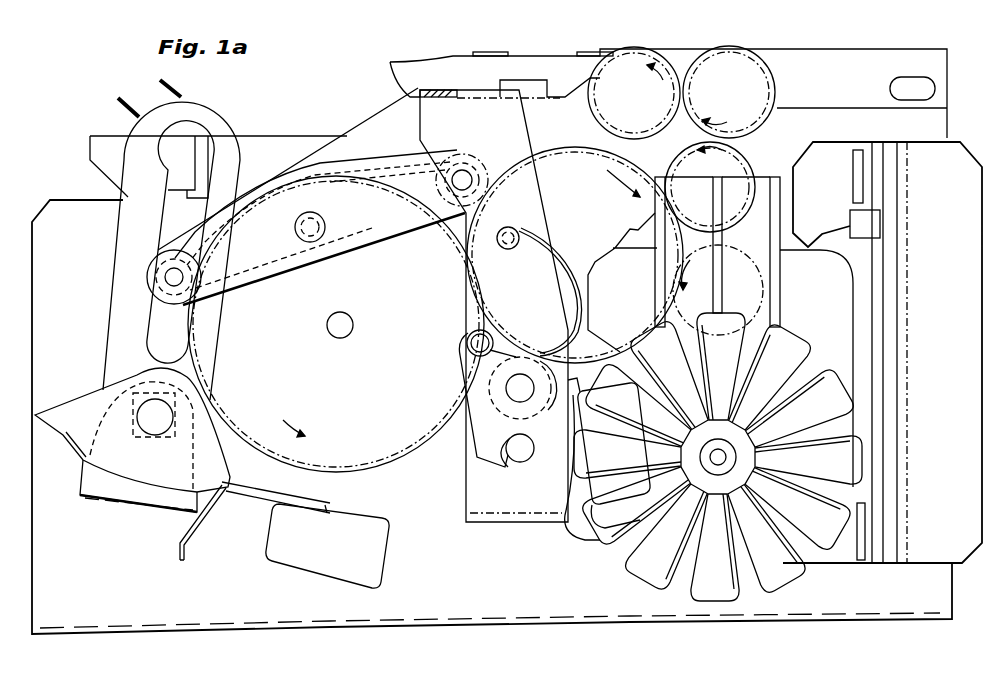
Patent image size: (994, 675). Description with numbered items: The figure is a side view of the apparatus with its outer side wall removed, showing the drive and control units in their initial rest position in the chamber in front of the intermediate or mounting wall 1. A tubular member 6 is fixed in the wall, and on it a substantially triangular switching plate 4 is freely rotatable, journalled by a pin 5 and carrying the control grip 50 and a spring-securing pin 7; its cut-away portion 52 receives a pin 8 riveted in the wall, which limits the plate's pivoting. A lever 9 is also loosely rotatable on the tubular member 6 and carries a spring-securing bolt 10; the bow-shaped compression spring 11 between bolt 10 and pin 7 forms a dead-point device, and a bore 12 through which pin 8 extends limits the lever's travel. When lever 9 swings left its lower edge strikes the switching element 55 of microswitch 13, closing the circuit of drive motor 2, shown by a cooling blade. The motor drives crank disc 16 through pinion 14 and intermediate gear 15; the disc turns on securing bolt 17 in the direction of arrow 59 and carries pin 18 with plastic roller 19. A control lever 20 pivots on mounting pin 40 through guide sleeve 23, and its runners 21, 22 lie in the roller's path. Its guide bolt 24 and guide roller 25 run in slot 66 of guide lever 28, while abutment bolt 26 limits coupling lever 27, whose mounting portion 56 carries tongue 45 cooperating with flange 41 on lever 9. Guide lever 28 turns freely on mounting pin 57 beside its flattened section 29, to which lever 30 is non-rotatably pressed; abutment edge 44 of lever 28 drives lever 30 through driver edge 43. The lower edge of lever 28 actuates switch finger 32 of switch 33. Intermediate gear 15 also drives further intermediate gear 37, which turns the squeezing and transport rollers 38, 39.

The mounting wall 1 is at (35, 227).
The drive motor 2 is at (858, 447).
The switching plate 4 is at (542, 425).
The pin 5 is at (505, 387).
The tubular member 6 is at (490, 404).
The spring-securing pin 7 is at (468, 346).
The pin 8 is at (523, 463).
The lever 9 is at (545, 228).
The spring-securing bolt 10 is at (508, 250).
The compression spring 11 is at (573, 275).
The bore 12 is at (506, 458).
The microswitch 13 is at (597, 530).
The pinion 14 is at (752, 297).
The intermediate gear 15 is at (608, 173).
The crank disc 16 is at (385, 466).
The securing bolt 17 is at (340, 340).
The pin 18 is at (322, 240).
The roller 19 is at (302, 243).
The control lever 20 is at (258, 212).
The runner 21 is at (262, 278).
The runner 22 is at (405, 238).
The guide sleeve 23 is at (476, 162).
The guide bolt 24 is at (165, 278).
The guide roller 25 is at (155, 258).
The abutment bolt 26 is at (298, 178).
The coupling lever 27 is at (340, 170).
The guide lever 28 is at (200, 100).
The flattened section 29 is at (157, 436).
The lever 30 is at (138, 372).
The switch finger 32 is at (192, 540).
The switch 33 is at (300, 568).
The further intermediate gear 37 is at (746, 178).
The squeezing and transport roller 38 is at (770, 90).
The squeezing and transport roller 39 is at (646, 60).
The mounting pin 40 is at (460, 170).
The flange 41 is at (436, 90).
The driver edge 43 is at (68, 442).
The abutment edge 44 is at (203, 490).
The tongue 45 is at (517, 168).
The control grip 50 is at (586, 401).
The cut-away portion 52 is at (567, 520).
The switching element 55 is at (588, 431).
The mounting portion 56 is at (488, 166).
The mounting pin 57 is at (162, 395).
The arrow 59 is at (308, 429).
The slot 66 is at (170, 210).